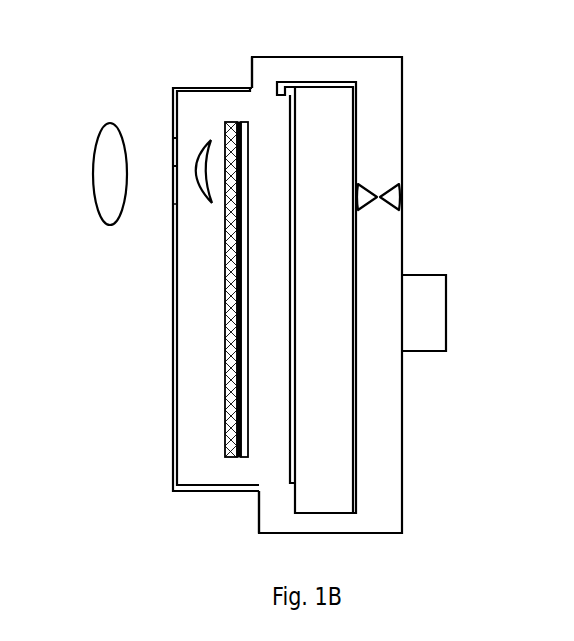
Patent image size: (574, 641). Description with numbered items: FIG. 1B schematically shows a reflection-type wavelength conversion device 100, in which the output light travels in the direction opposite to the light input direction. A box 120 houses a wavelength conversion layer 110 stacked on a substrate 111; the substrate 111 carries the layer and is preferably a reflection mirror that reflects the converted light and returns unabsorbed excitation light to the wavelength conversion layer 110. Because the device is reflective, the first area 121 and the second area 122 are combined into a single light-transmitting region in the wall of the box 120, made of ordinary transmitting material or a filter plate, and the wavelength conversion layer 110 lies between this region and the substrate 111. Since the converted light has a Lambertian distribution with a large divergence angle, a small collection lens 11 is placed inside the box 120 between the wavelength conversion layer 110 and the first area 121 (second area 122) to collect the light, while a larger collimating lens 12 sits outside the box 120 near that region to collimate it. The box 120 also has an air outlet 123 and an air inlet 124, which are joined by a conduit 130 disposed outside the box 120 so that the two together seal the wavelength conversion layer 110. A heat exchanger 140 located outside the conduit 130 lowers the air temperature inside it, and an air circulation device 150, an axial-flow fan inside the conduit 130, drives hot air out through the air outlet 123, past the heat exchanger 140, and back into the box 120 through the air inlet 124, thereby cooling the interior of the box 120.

The wavelength conversion device 100 is at (98, 80).
The collection lens 11 is at (203, 200).
The collimating lens 12 is at (103, 192).
The wavelength conversion layer 110 is at (232, 122).
The substrate 111 is at (245, 122).
The box 120 is at (172, 418).
The first area 121 is at (175, 153).
The second area 122 is at (175, 152).
The air outlet 123 is at (272, 488).
The air inlet 124 is at (262, 92).
The conduit 130 is at (385, 468).
The heat exchanger 140 is at (437, 308).
The air circulation device 150 is at (390, 195).